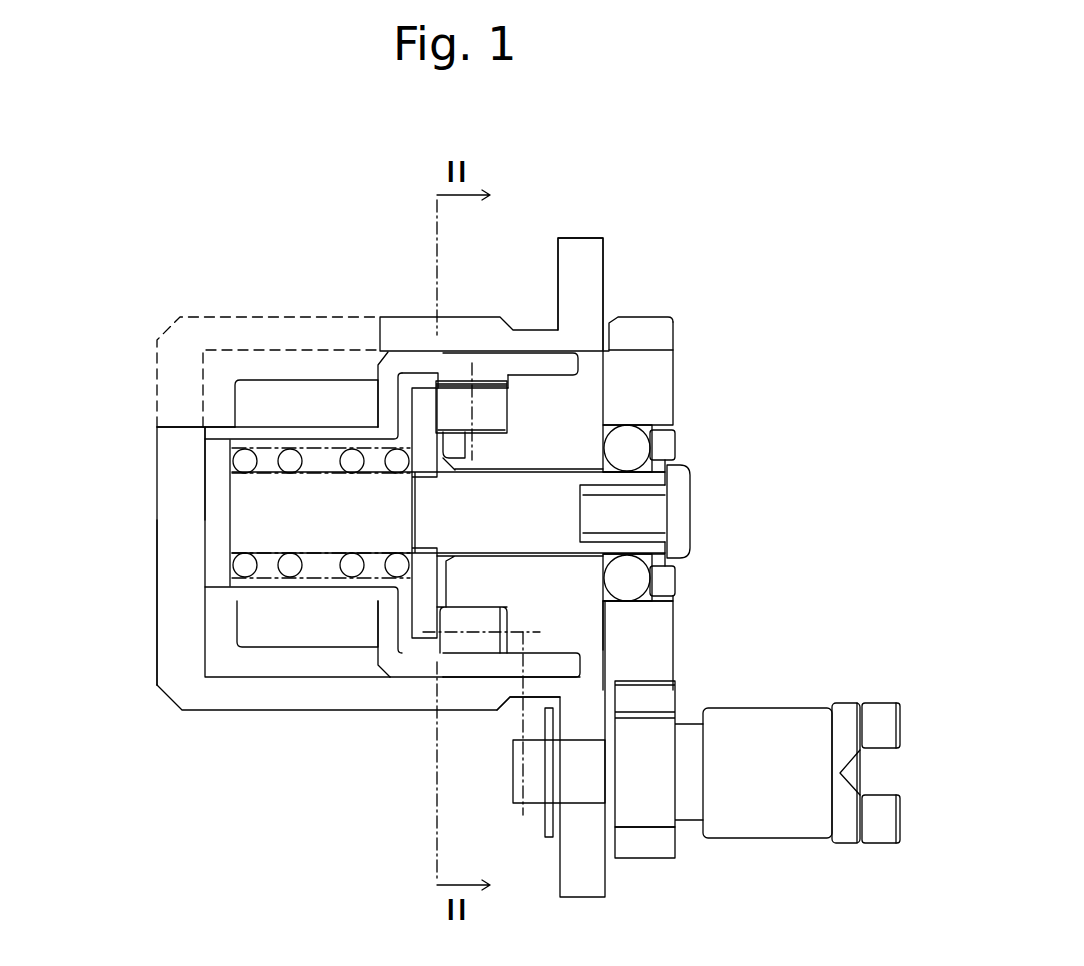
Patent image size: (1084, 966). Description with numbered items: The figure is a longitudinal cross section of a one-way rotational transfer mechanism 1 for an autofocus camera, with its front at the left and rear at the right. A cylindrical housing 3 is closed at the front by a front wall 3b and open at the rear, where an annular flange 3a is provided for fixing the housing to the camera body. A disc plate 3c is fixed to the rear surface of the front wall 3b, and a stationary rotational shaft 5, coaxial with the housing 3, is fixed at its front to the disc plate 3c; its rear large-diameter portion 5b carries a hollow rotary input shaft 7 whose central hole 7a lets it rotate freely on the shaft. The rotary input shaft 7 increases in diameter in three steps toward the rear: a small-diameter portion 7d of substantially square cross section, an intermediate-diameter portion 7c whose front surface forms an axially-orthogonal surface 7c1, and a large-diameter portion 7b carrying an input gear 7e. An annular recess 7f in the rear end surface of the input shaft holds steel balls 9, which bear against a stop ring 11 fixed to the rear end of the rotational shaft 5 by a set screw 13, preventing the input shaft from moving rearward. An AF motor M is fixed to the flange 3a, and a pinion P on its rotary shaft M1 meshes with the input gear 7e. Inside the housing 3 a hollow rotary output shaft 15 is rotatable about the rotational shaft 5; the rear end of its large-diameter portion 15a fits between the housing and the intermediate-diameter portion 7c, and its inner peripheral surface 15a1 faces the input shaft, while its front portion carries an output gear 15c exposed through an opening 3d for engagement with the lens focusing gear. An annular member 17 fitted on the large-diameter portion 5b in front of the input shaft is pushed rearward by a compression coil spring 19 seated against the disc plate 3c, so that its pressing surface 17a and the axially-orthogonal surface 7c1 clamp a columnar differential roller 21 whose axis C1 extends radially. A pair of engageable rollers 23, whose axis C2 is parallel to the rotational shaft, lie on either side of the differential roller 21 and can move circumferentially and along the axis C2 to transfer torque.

The one-way rotational transfer mechanism 1 is at (851, 248).
The cylindrical housing 3 is at (215, 730).
The annular flange 3a is at (558, 263).
The front wall 3b is at (180, 620).
The disc plate 3c is at (215, 463).
The opening 3d is at (183, 427).
The rotational shaft 5 is at (245, 530).
The rear large-diameter portion 5b is at (557, 523).
The rotary input shaft 7 is at (620, 393).
The central hole 7a is at (513, 697).
The large-diameter portion 7b is at (654, 350).
The intermediate-diameter portion 7c is at (523, 385).
The axially-orthogonal surface 7c1 is at (513, 551).
The small-diameter portion 7d is at (400, 652).
The input gear 7e is at (635, 332).
The annular recess 7f is at (612, 580).
The steel balls 9 is at (637, 445).
The stop ring 11 is at (668, 438).
The set screw 13 is at (680, 490).
The rotary output shaft 15 is at (263, 427).
The large-diameter portion 15a is at (380, 350).
The inner peripheral surface 15a1 is at (557, 376).
The output gear 15c is at (280, 390).
The annular member 17 is at (420, 592).
The pressing surface 17a is at (455, 398).
The compression coil spring 19 is at (290, 570).
The differential roller 21 is at (462, 412).
The engageable rollers 23 is at (448, 604).
The axis of the differential roller C1 is at (472, 413).
The axis of the engageable roller C2 is at (526, 742).
The pinion P is at (655, 848).
The rotary shaft M1 is at (690, 815).
The AF motor M is at (795, 823).